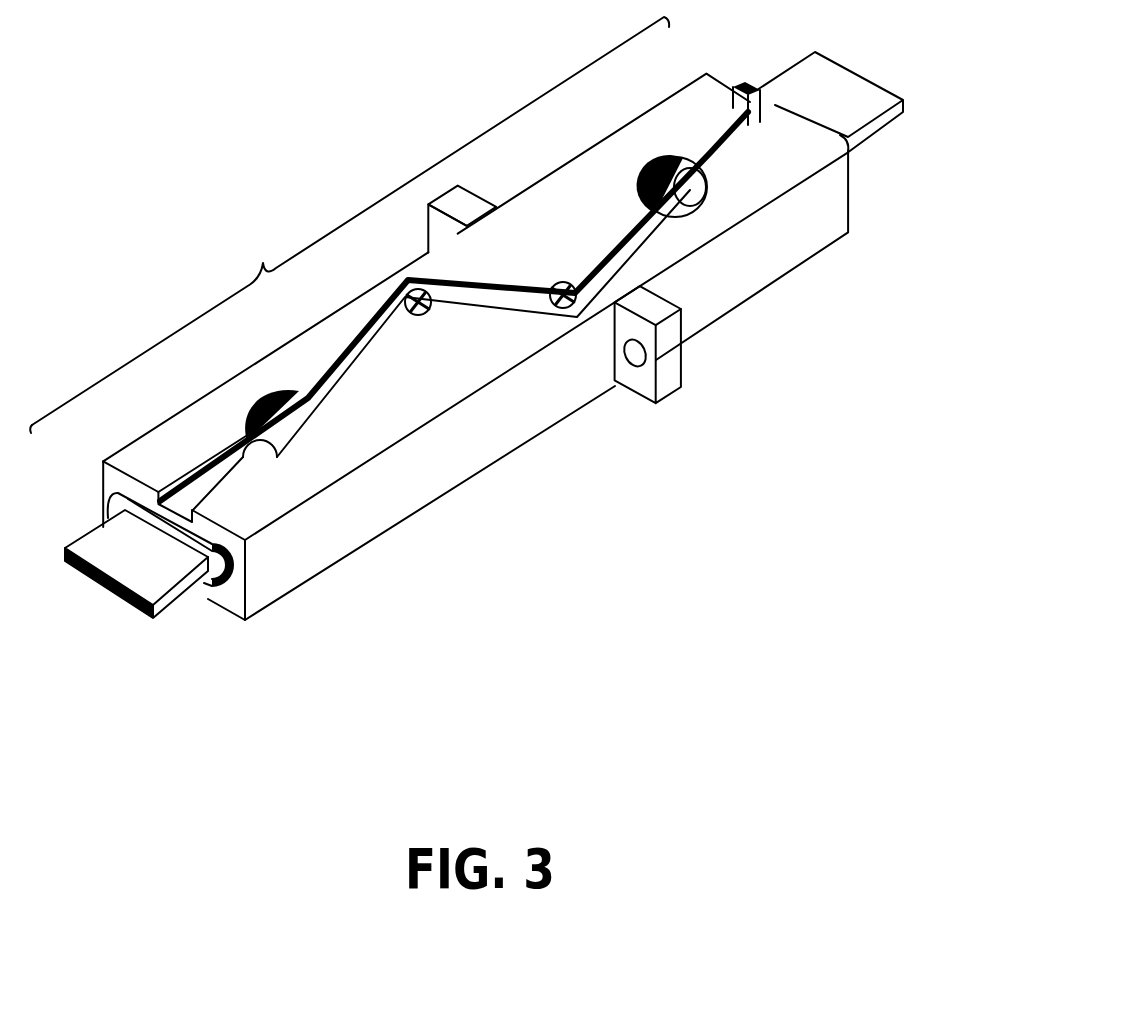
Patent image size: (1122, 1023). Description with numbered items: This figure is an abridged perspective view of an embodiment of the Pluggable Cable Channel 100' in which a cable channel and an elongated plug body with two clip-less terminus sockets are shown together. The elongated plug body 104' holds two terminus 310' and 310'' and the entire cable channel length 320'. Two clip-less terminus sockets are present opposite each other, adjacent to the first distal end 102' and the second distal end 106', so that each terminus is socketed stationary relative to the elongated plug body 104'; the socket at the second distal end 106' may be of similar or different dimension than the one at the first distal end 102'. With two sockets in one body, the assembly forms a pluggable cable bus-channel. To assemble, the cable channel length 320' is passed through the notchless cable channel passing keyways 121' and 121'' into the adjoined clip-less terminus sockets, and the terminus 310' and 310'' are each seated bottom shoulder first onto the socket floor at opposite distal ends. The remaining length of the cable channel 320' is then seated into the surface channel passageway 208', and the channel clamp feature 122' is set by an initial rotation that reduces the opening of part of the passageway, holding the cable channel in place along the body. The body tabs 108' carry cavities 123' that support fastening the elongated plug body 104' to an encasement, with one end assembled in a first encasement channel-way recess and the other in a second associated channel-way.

The mounting assembly 100' is at (349, 225).
The first distal end 102' is at (475, 347).
The elongated plug body 104' is at (235, 401).
The second distal end 106' is at (651, 98).
The body tabs 108' is at (605, 270).
The notchless cable channel passing keyway 121' is at (285, 524).
The notchless cable channel passing keyway 121'' is at (830, 215).
The channel clamp feature 122' is at (460, 296).
The cavities 123' is at (620, 399).
The surface channel passageway 208' is at (490, 408).
The terminus 310' is at (238, 579).
The terminus 310'' is at (857, 154).
The cable channel length 320' is at (741, 245).